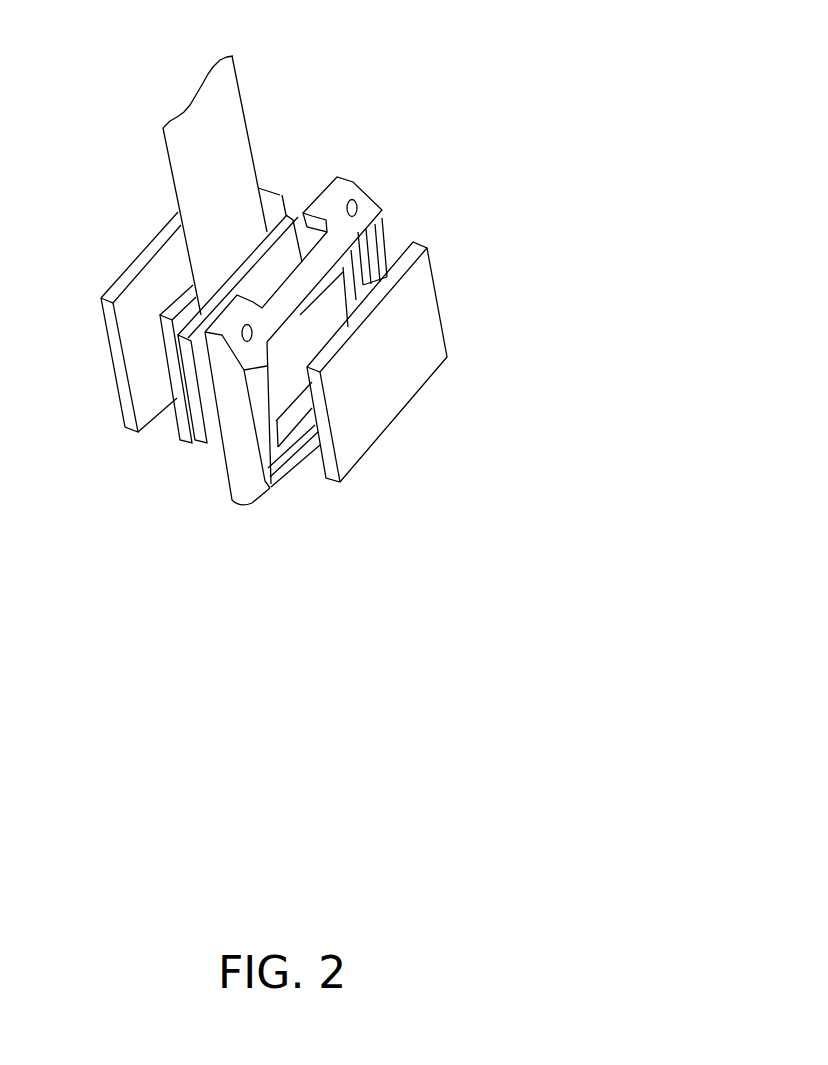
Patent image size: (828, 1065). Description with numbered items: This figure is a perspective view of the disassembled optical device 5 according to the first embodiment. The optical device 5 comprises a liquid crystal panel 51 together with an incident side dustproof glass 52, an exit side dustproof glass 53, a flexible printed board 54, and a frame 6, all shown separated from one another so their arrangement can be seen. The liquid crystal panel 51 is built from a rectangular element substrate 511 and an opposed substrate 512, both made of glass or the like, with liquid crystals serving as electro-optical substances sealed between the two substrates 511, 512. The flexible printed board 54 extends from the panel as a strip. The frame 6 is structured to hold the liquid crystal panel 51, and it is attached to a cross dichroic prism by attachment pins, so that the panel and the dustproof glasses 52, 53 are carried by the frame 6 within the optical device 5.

The optical device 5 is at (396, 71).
The frame 6 is at (245, 497).
The liquid crystal panel 51 is at (205, 560).
The element substrate 511 is at (188, 447).
The opposed substrate 512 is at (205, 445).
The incident side dustproof glass 52 is at (363, 437).
The exit side dustproof glass 53 is at (120, 400).
The flexible printed board 54 is at (187, 192).